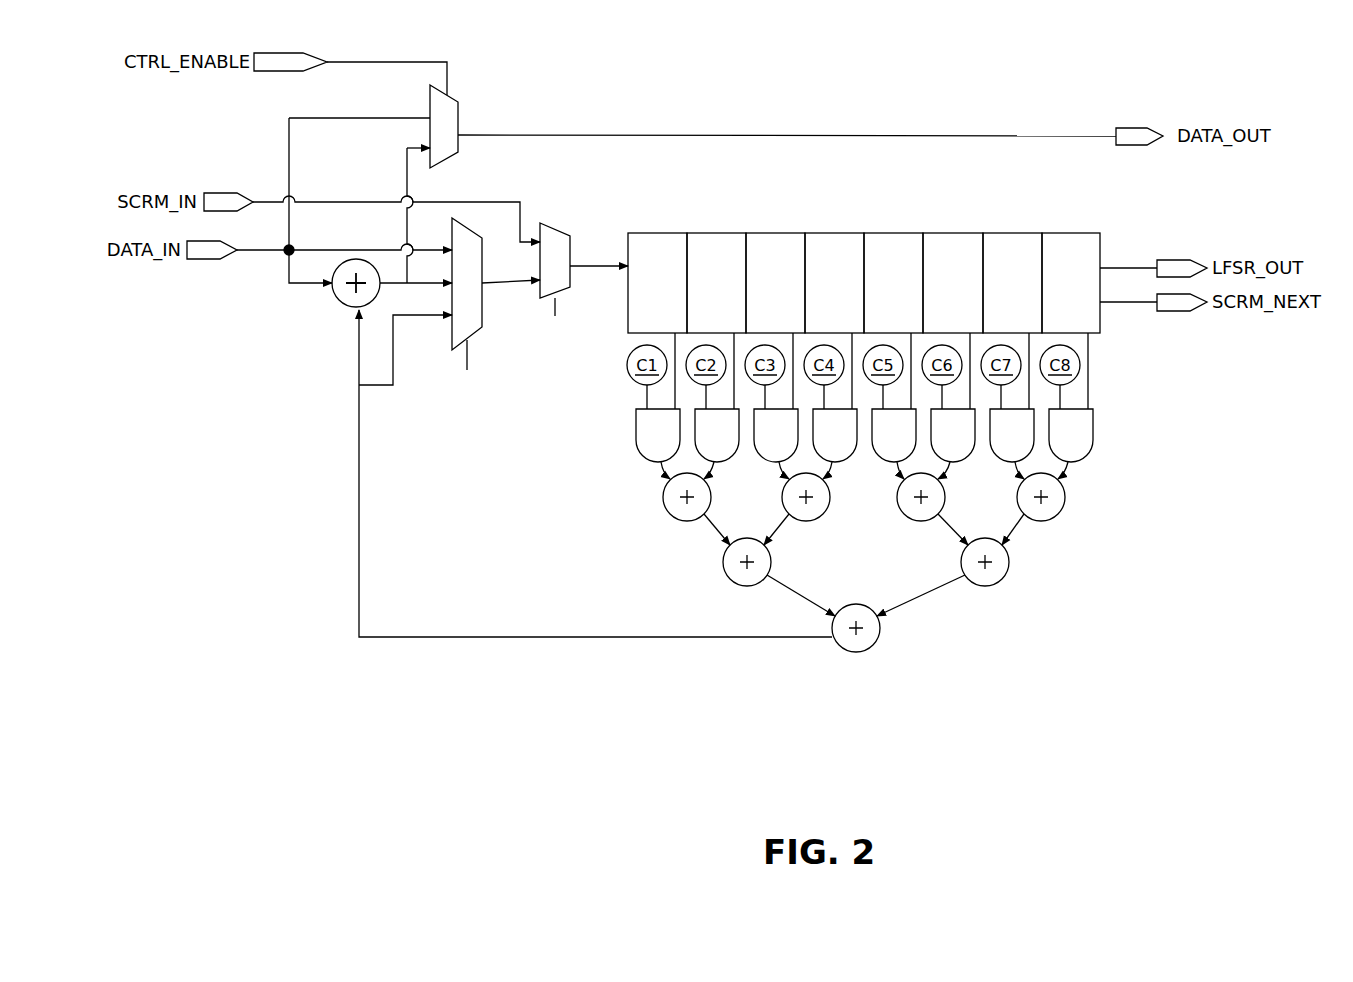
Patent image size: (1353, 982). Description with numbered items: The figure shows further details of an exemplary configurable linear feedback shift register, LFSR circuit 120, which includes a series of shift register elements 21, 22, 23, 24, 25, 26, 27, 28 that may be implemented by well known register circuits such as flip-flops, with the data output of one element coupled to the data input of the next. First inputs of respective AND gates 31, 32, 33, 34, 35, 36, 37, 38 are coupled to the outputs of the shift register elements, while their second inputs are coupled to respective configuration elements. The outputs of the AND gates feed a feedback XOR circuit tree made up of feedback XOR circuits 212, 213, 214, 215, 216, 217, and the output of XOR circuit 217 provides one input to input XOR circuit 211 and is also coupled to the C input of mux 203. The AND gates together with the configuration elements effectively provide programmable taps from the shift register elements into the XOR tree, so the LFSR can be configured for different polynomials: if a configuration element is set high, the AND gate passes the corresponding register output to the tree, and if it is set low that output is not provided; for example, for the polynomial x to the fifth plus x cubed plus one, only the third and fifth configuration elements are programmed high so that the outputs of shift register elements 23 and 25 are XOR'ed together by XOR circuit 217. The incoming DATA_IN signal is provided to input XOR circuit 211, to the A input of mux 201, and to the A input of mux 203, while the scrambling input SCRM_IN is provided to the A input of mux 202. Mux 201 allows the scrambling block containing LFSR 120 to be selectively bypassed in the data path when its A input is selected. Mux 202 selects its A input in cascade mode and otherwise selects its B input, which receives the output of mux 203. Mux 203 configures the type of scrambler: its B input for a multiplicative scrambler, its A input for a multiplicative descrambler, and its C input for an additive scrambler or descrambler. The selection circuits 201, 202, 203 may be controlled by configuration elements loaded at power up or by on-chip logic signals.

The LFSR circuit 120 is at (547, 789).
The mux 201 is at (467, 105).
The mux 202 is at (560, 230).
The mux 203 is at (477, 330).
The input XOR circuit 211 is at (339, 302).
The feedback XOR circuit 212 is at (730, 583).
The feedback XOR circuit 213 is at (824, 514).
The feedback XOR circuit 214 is at (903, 518).
The feedback XOR circuit 215 is at (1067, 508).
The feedback XOR circuit 216 is at (995, 593).
The feedback XOR circuit 217 is at (880, 637).
The shift register element 21 is at (645, 295).
The shift register element 22 is at (704, 295).
The shift register element 23 is at (763, 295).
The shift register element 24 is at (822, 295).
The shift register element 25 is at (881, 295).
The shift register element 26 is at (940, 295).
The shift register element 27 is at (999, 295).
The shift register element 28 is at (1058, 295).
The AND gate 31 is at (648, 423).
The AND gate 32 is at (707, 423).
The AND gate 33 is at (766, 423).
The AND gate 34 is at (825, 423).
The AND gate 35 is at (884, 423).
The AND gate 36 is at (943, 423).
The AND gate 37 is at (1002, 423).
The AND gate 38 is at (1061, 423).